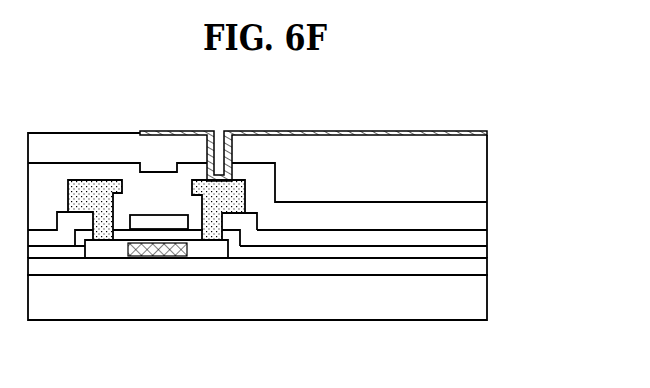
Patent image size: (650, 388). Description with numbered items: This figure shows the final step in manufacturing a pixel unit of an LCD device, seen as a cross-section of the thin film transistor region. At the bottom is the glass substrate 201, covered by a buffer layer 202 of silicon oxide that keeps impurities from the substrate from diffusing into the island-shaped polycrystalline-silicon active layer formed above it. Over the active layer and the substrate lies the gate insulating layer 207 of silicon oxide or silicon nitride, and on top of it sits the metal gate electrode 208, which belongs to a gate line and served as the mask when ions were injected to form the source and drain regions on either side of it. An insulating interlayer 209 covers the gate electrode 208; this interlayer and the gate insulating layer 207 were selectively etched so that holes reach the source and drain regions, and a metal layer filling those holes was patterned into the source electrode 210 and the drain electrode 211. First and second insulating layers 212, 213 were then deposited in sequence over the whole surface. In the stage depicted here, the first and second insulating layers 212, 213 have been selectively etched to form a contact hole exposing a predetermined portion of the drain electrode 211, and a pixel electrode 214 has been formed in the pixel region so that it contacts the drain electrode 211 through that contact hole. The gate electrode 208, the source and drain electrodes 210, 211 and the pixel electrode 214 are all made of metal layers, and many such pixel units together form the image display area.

The glass substrate 201 is at (477, 308).
The buffer layer 202 is at (475, 267).
The gate insulating layer 207 is at (477, 245).
The gate electrode 208 is at (155, 223).
The insulating interlayer 209 is at (477, 237).
The source electrode 210 is at (97, 185).
The drain electrode 211 is at (238, 188).
The first insulating layer 212 is at (473, 212).
The second insulating layer 213 is at (477, 154).
The pixel electrode 214 is at (487, 133).